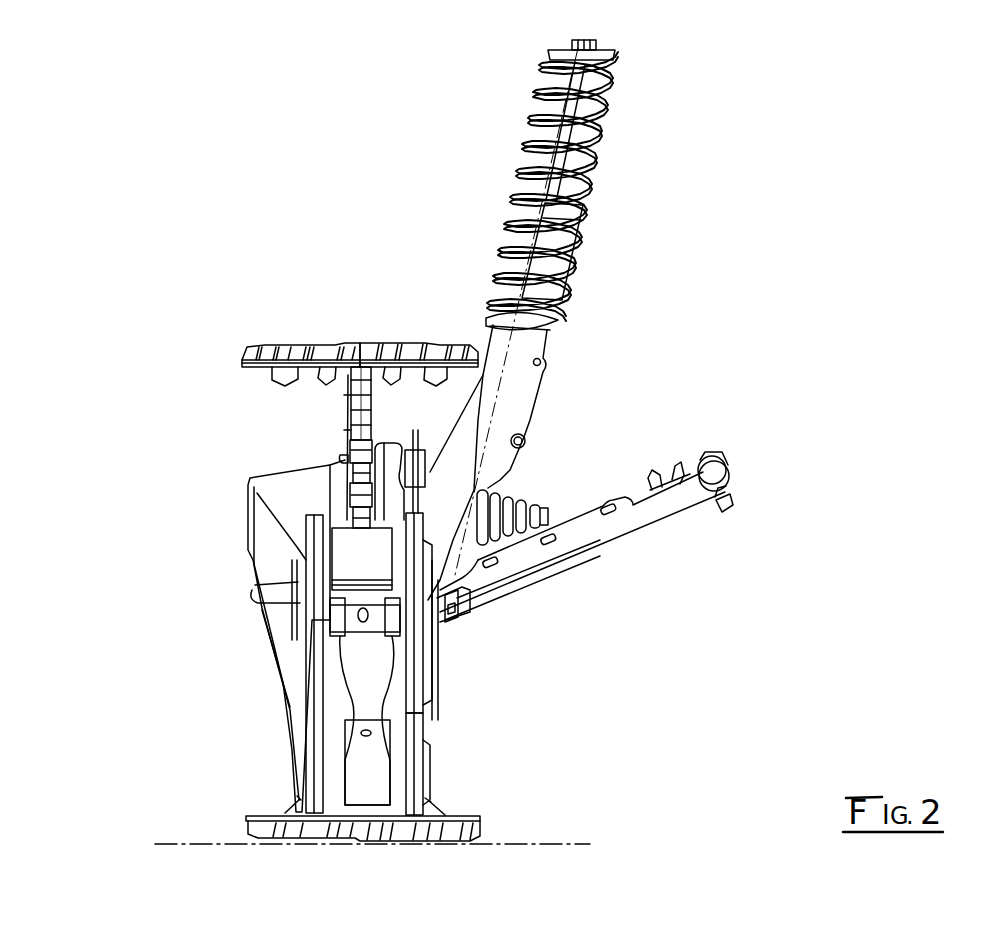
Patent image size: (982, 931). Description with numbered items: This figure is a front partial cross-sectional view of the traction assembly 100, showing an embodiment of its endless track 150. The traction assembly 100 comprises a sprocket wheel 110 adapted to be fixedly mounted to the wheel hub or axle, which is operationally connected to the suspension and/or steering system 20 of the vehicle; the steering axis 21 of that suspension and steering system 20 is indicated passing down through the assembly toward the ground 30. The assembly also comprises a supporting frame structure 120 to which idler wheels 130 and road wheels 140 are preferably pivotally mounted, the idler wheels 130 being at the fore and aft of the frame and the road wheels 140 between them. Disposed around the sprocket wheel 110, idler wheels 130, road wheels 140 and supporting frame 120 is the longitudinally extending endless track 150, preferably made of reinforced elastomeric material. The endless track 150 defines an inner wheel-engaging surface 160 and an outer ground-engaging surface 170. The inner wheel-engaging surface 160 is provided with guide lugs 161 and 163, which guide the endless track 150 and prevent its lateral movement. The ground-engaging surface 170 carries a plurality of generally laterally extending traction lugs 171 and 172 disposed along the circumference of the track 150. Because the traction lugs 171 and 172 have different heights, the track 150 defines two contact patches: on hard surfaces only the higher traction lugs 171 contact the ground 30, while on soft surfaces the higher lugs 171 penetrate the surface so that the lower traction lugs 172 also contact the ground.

The suspension and/or steering system 20 is at (580, 380).
The steering axis 21 is at (497, 397).
The ground 30 is at (591, 846).
The traction assembly 100 is at (312, 591).
The sprocket wheel 110 is at (297, 447).
The supporting frame structure 120 is at (356, 682).
The idler wheels 130 is at (420, 662).
The road wheels 140 is at (420, 758).
The endless track 150 is at (347, 591).
The inner wheel-engaging surface 160 is at (478, 804).
The guide lug 161 is at (350, 413).
The guide lug 163 is at (282, 382).
The outer ground-engaging surface 170 is at (470, 858).
The higher traction lug 171 is at (425, 347).
The lower traction lug 172 is at (328, 350).